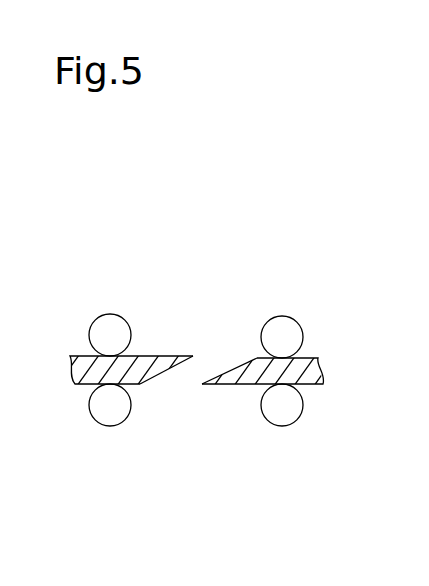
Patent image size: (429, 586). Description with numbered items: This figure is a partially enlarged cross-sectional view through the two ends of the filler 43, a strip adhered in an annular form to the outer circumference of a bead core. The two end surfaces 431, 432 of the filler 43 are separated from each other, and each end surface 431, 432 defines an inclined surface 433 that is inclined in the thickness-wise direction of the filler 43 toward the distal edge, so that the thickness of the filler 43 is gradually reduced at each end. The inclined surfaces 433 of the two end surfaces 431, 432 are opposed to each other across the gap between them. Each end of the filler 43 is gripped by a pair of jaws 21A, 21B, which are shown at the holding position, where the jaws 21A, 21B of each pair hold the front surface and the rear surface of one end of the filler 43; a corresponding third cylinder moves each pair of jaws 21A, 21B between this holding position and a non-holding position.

The jaw 21A is at (118, 427).
The jaw 21B is at (110, 314).
The filler 43 is at (197, 369).
The end surface 431 is at (153, 377).
The end surface 432 is at (205, 387).
The inclined surface 433 is at (245, 360).